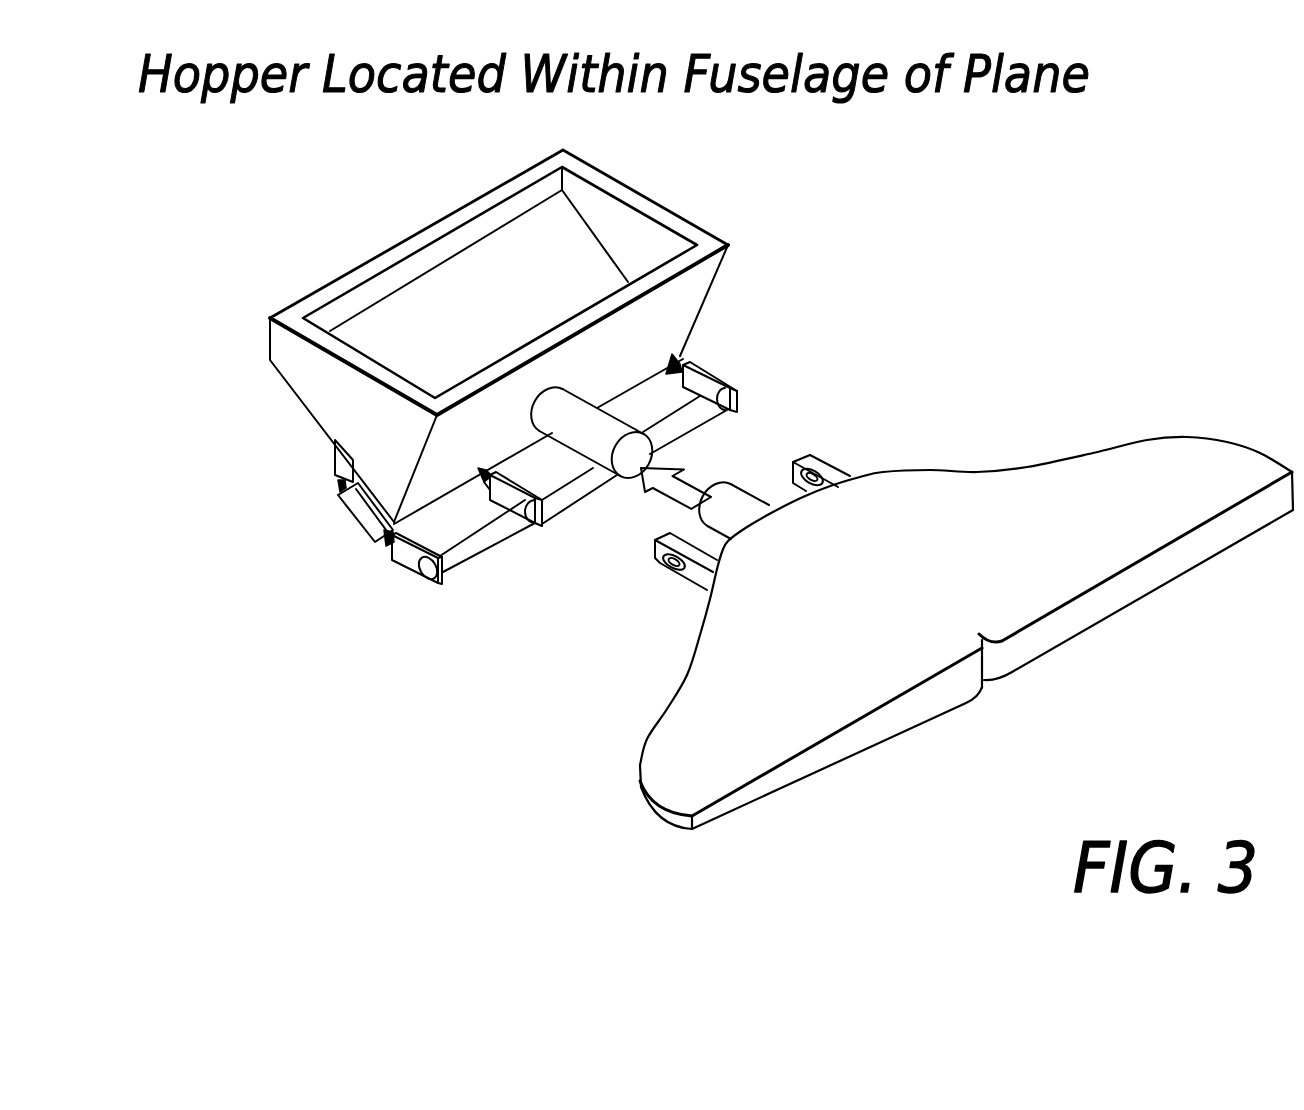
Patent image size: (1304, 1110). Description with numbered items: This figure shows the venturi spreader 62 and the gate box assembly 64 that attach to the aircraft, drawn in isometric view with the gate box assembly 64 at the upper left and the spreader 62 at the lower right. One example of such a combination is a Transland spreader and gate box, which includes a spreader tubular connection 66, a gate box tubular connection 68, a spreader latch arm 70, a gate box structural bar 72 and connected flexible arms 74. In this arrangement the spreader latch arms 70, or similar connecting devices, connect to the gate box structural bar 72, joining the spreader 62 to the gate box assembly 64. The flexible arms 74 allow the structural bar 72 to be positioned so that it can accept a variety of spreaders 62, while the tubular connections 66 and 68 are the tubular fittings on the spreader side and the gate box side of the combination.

The venturi spreader 62 is at (890, 567).
The gate box assembly 64 is at (658, 213).
The spreader tubular connection 66 is at (723, 487).
The gate box tubular connection 68 is at (611, 474).
The spreader latch arm 70 is at (817, 458).
The gate box structural bar 72 is at (697, 398).
The flexible arms 74 is at (338, 511).